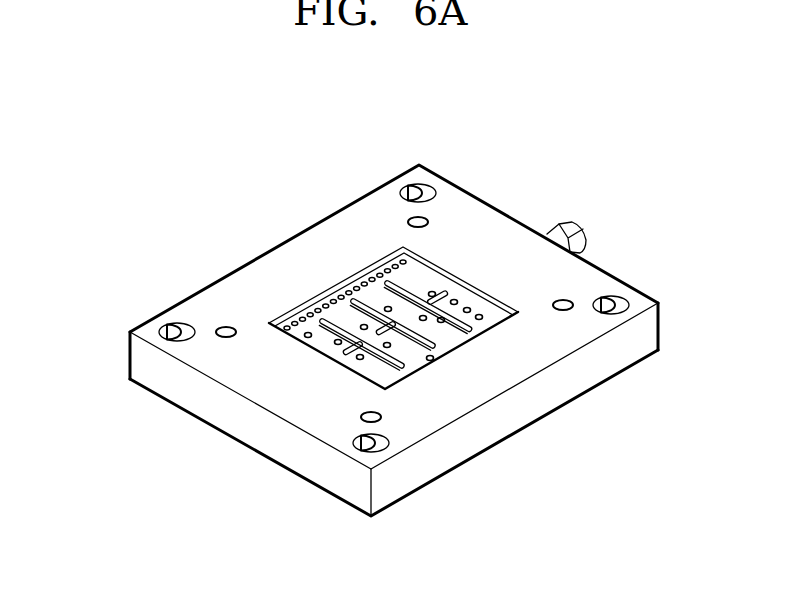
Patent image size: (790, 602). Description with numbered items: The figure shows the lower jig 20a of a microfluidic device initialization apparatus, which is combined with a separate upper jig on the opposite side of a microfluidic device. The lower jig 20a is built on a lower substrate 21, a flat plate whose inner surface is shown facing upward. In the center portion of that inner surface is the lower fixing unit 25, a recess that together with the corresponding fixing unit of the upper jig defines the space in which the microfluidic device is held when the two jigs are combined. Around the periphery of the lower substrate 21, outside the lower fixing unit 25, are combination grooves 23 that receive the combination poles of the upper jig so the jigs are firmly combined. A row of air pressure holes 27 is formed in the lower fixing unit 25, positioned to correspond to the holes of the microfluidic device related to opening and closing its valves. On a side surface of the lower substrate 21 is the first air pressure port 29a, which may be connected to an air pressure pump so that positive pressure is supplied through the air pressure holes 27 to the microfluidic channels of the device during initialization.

The lower jig 20a is at (138, 285).
The lower substrate 21 is at (250, 285).
The combination grooves 23 is at (225, 327).
The lower fixing unit 25 is at (417, 282).
The air pressure holes 27 is at (337, 297).
The first air pressure port 29a is at (572, 226).